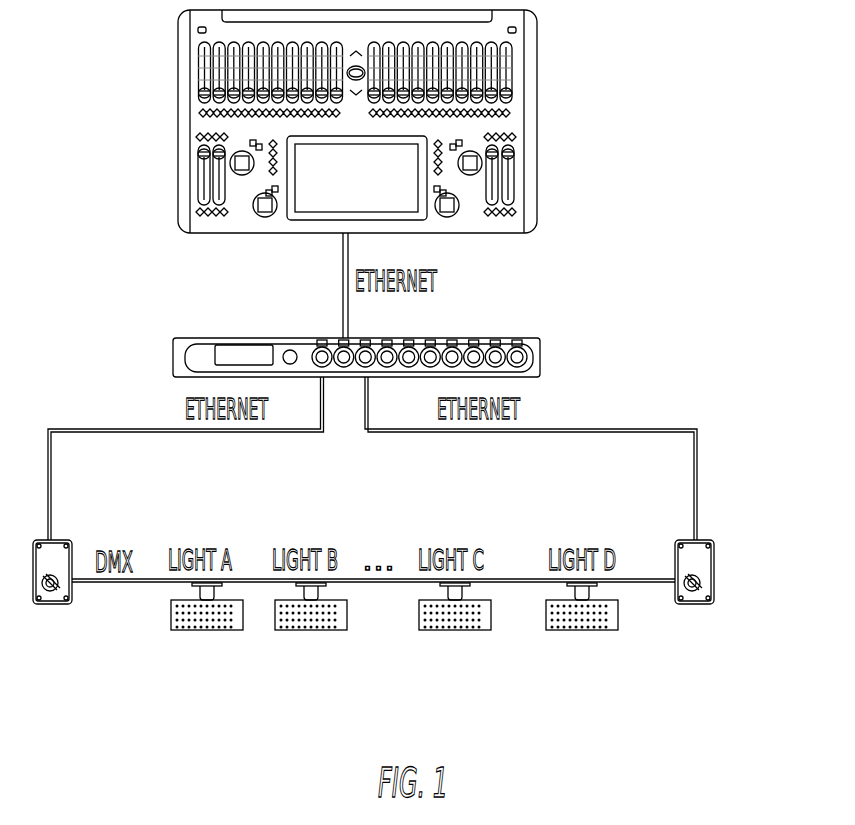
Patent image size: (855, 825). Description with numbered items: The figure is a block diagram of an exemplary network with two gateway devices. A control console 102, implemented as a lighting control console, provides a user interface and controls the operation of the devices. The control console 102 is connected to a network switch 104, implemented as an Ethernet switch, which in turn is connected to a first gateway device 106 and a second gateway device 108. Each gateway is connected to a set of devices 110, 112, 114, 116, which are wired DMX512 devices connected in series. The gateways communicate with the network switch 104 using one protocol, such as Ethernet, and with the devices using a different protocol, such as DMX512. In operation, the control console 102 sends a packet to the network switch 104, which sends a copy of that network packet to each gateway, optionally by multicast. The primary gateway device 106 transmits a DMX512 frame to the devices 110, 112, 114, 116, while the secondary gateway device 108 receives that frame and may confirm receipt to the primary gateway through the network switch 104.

The control console 102 is at (537, 72).
The network switch 104 is at (542, 345).
The gateway device 106 is at (43, 604).
The gateway device 108 is at (714, 580).
The device 110 is at (183, 632).
The device 112 is at (292, 632).
The device 114 is at (431, 632).
The device 116 is at (558, 632).